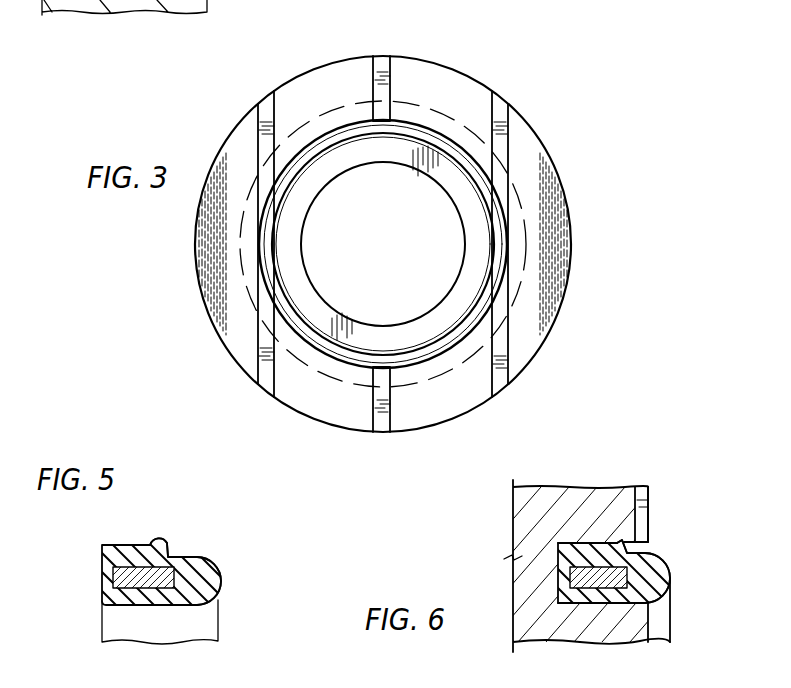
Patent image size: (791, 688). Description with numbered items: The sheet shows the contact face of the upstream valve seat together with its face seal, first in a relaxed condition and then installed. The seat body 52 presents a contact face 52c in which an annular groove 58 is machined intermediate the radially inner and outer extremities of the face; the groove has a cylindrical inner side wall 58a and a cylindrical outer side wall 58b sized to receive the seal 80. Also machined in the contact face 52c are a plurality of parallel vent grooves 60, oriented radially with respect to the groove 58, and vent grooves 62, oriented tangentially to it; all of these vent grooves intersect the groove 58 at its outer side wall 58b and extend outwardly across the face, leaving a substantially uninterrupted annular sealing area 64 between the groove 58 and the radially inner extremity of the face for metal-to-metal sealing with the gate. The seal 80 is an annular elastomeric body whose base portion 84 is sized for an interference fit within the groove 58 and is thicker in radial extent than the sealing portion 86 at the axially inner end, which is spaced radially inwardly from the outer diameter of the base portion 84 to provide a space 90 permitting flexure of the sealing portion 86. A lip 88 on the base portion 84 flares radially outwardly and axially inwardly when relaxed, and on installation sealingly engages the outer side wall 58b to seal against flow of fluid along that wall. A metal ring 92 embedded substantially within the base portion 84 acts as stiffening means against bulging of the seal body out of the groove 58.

In FIG. 6, the seat body 52 is at (522, 515).
In FIG. 3, the contact face 52c is at (535, 318).
In FIG. 6, the contact face 52c is at (654, 530).
In FIG. 6, the annular groove 58 is at (588, 555).
In FIG. 3, the inner side wall 58a is at (287, 278).
In FIG. 6, the inner side wall 58a is at (604, 607).
In FIG. 3, the outer side wall 58b is at (313, 147).
In FIG. 6, the outer side wall 58b is at (588, 541).
In FIG. 3, the vent grooves 60 is at (385, 62).
In FIG. 6, the vent grooves 60 is at (641, 512).
In FIG. 3, the vent grooves 62 is at (271, 100).
In FIG. 3, the annular sealing area 64 is at (465, 274).
In FIG. 6, the annular sealing area 64 is at (648, 625).
In FIG. 3, the seal 80 is at (429, 128).
In FIG. 5, the seal 80 is at (157, 585).
In FIG. 5, the base portion 84 is at (108, 562).
In FIG. 6, the base portion 84 is at (560, 582).
In FIG. 5, the sealing portion 86 is at (207, 580).
In FIG. 6, the sealing portion 86 is at (662, 583).
In FIG. 5, the lip 88 is at (171, 539).
In FIG. 6, the lip 88 is at (620, 540).
In FIG. 6, the space 90 is at (633, 550).
In FIG. 5, the metal ring 92 is at (113, 584).
In FIG. 6, the metal ring 92 is at (567, 607).